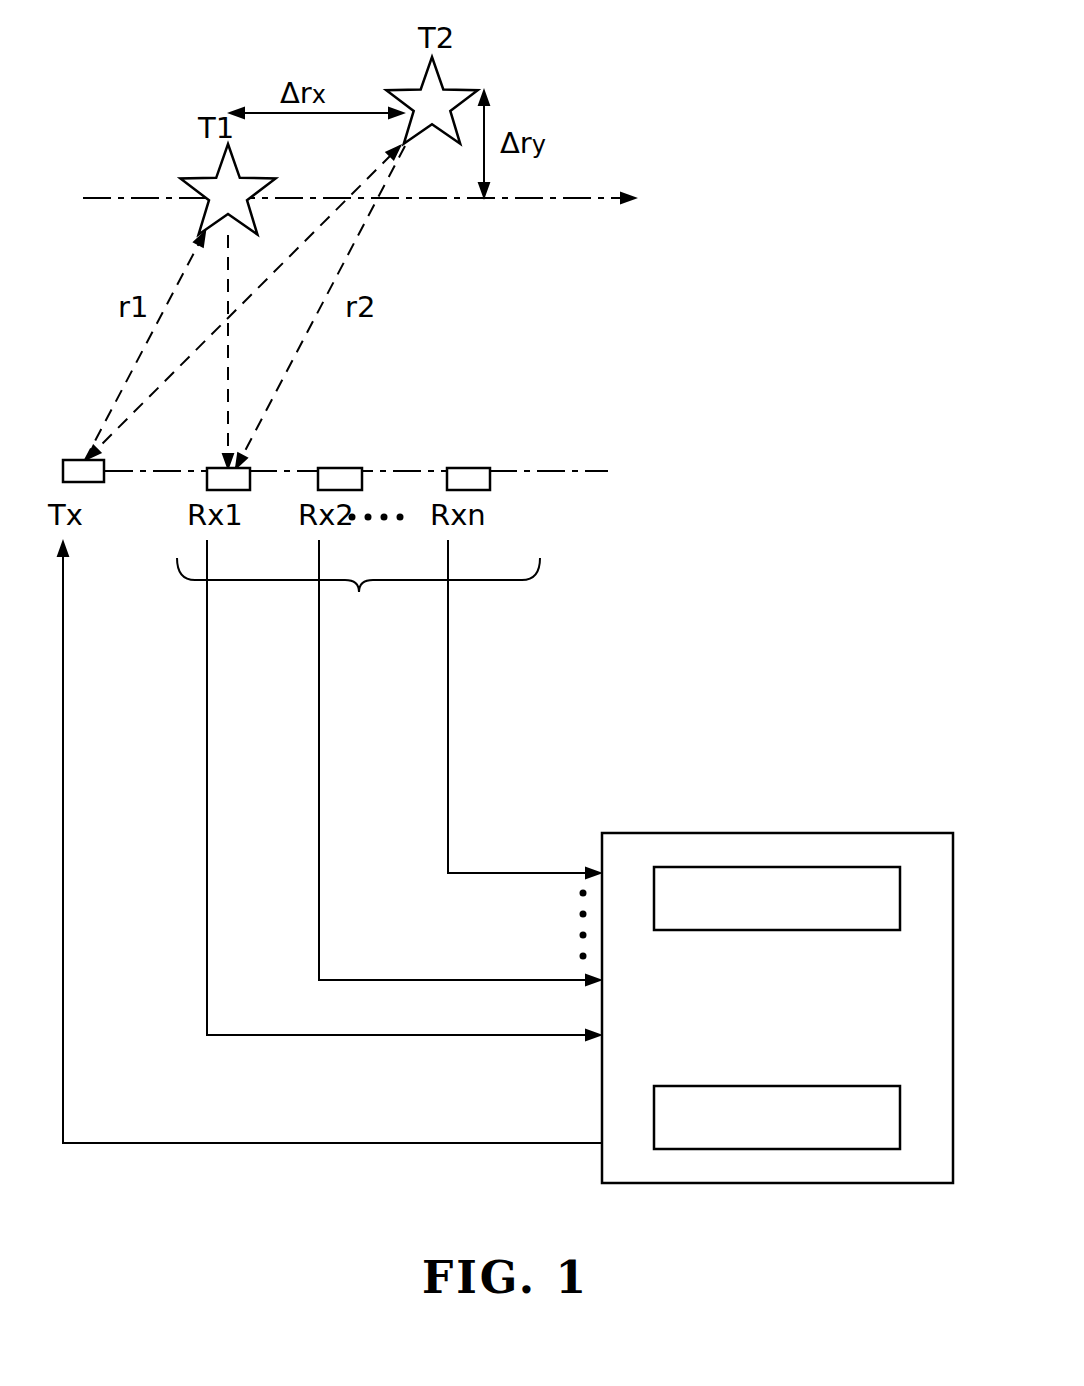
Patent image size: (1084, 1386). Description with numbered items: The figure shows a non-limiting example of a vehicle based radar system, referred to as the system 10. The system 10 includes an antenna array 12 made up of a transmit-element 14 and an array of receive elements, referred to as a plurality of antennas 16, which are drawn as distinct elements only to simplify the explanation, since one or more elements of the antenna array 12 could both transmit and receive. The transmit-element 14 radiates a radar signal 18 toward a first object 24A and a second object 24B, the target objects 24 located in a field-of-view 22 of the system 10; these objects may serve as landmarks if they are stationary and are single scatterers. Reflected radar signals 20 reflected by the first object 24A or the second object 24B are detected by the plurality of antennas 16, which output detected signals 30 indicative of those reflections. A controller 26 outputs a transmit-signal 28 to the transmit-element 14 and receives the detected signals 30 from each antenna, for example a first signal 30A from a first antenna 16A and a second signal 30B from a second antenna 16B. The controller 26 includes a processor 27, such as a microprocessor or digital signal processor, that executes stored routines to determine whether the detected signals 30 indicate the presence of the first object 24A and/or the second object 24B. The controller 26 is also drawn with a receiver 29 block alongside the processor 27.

The system 10 is at (738, 172).
The antenna array 12 is at (547, 372).
The transmit-element 14 is at (82, 460).
The plurality of antennas 16 is at (358, 592).
The first antenna 16A is at (245, 468).
The second antenna 16B is at (348, 468).
The radar signal 18 is at (205, 340).
The reflected radar signals 20 is at (229, 343).
The field-of-view 22 is at (505, 55).
The objects 24 is at (205, 60).
The first object 24A is at (215, 185).
The second object 24B is at (420, 93).
The controller 26 is at (655, 1183).
The processor 27 is at (812, 867).
The transmit-signal 28 is at (240, 1144).
The receiver 29 is at (825, 1150).
The detected signals 30 is at (374, 816).
The first signal 30A is at (278, 1036).
The second signal 30B is at (340, 980).